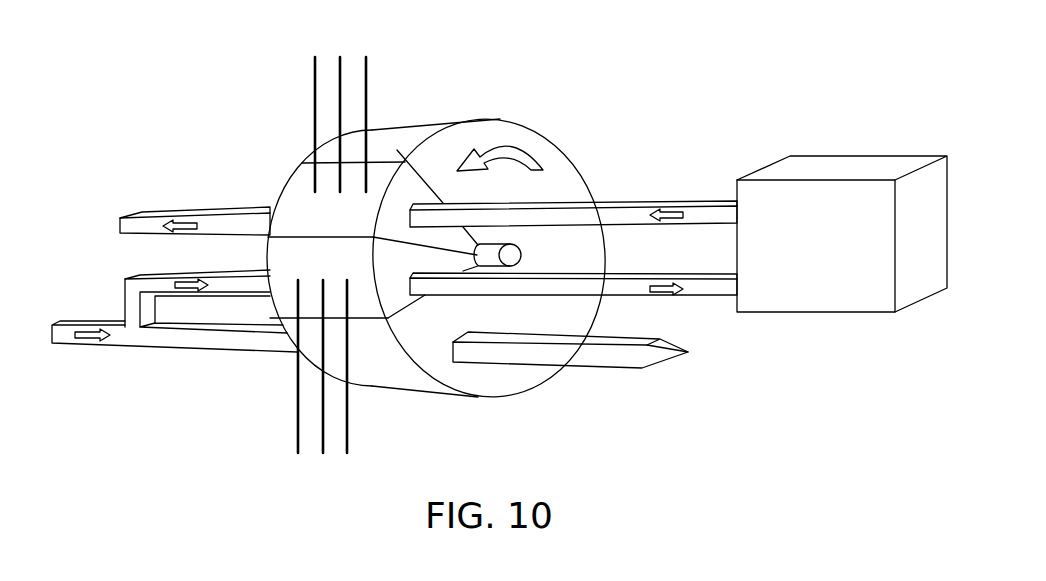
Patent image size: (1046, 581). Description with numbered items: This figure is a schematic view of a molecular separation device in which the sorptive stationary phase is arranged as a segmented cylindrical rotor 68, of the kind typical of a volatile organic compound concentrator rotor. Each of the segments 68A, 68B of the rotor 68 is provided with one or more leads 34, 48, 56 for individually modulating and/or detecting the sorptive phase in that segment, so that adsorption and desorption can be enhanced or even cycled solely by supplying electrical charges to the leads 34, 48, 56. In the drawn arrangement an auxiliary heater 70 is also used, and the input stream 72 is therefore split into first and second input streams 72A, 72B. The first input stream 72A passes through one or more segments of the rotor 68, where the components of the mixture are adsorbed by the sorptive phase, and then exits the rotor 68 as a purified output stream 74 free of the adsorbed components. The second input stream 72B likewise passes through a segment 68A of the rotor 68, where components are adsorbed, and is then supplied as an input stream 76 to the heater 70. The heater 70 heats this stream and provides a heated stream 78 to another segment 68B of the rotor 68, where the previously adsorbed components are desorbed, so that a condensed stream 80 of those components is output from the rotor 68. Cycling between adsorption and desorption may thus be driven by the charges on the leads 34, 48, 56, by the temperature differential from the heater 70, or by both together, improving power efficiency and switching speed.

The lead 34 is at (313, 63).
The lead 48 is at (340, 70).
The lead 56 is at (370, 63).
The segmented cylindrical rotor 68 is at (537, 133).
The segment 68A is at (390, 292).
The segment 68B is at (413, 183).
The auxiliary heater 70 is at (838, 162).
The input stream 72 is at (174, 327).
The first input stream 72A is at (207, 352).
The second input stream 72B is at (180, 275).
The purified output stream 74 is at (602, 368).
The input stream to the heater 76 is at (718, 296).
The heated stream 78 is at (678, 201).
The condensed stream 80 is at (217, 210).